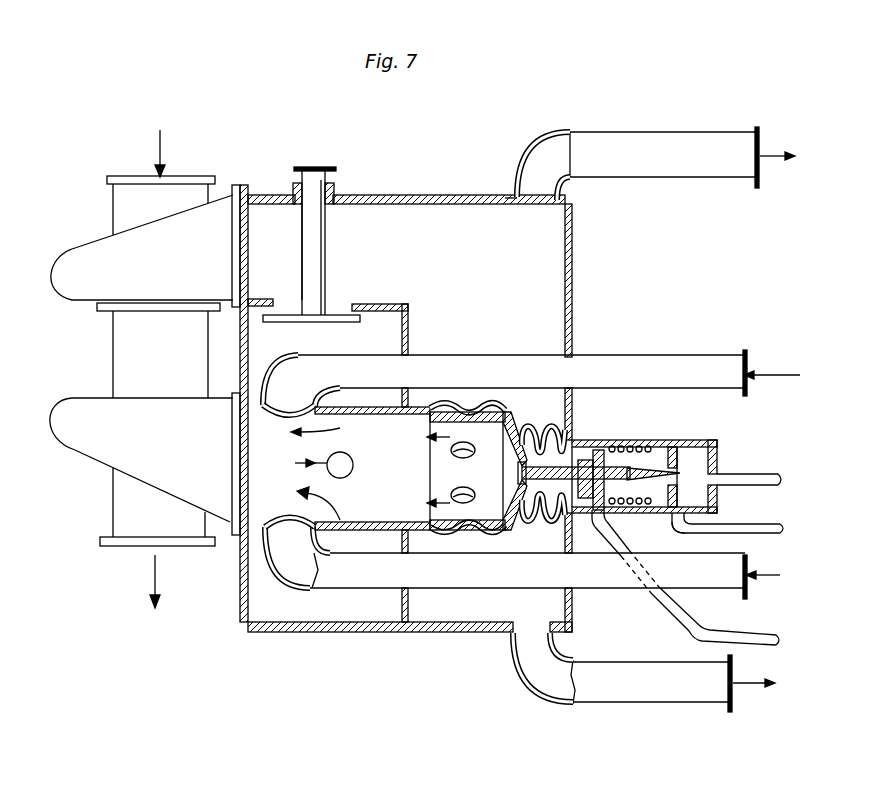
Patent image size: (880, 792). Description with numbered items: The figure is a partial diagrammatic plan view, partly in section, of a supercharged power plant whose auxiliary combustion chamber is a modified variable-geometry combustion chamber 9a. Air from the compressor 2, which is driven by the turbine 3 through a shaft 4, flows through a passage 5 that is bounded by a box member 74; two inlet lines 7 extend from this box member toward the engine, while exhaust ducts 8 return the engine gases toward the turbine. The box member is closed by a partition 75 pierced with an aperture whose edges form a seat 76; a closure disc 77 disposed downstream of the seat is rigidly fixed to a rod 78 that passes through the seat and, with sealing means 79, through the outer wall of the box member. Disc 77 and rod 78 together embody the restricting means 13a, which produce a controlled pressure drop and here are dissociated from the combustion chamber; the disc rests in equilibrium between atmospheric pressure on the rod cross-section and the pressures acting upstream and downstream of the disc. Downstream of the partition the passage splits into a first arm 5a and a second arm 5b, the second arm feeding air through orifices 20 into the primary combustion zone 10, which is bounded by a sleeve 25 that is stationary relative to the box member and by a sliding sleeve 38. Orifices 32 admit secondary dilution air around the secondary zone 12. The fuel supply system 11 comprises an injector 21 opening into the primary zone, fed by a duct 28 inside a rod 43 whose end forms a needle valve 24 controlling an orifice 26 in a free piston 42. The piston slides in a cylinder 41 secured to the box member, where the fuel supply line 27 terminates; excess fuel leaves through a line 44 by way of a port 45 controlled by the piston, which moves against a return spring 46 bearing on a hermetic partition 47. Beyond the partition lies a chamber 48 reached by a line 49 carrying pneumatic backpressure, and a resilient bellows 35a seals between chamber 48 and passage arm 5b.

The compressor 2 is at (70, 258).
The turbine 3 is at (74, 448).
The shaft 4 is at (125, 360).
The passage 5 is at (268, 207).
The first passage arm 5a is at (258, 600).
The second passage arm 5b is at (490, 612).
The inlet ducts 7 is at (632, 140).
The exhaust ducts 8 is at (648, 372).
The variable-geometry combustion chamber 9a is at (392, 473).
The primary combustion zone 10 is at (497, 479).
The fuel supply system 11 is at (648, 530).
The secondary zone 12 is at (245, 468).
The restricting means 13a is at (327, 300).
The orifices 20 is at (451, 492).
The injector 21 is at (515, 472).
The needle valve 24 is at (713, 492).
The sleeve 25 is at (473, 413).
The orifice 26 is at (678, 470).
The fuel supply line 27 is at (758, 475).
The fuel duct 28 is at (538, 443).
The orifices 32 is at (327, 472).
The bellows 35a is at (560, 425).
The sliding sleeve 38 is at (430, 430).
The cylinder 41 is at (716, 442).
The free piston 42 is at (676, 442).
The rod 43 is at (543, 496).
The excess fuel line 44 is at (760, 530).
The port 45 is at (672, 516).
The return spring 46 is at (633, 440).
The hermetic partition 47 is at (607, 505).
The chamber 48 is at (577, 455).
The backpressure line 49 is at (757, 637).
The box member 74 is at (458, 197).
The partition 75 is at (412, 320).
The seat 76 is at (285, 300).
The closure disc 77 is at (290, 322).
The rod 78 is at (320, 262).
The sealing means 79 is at (330, 185).